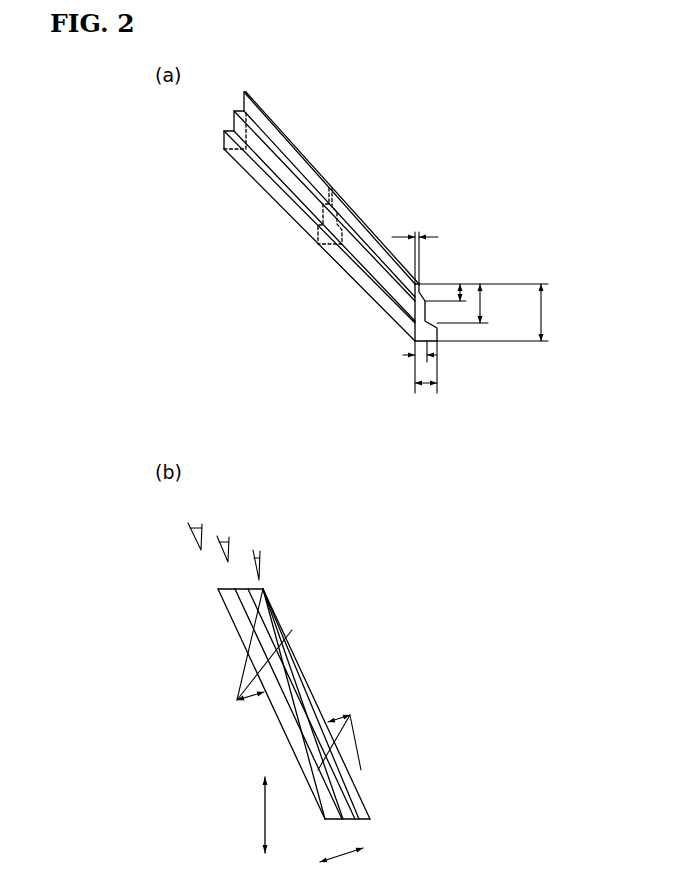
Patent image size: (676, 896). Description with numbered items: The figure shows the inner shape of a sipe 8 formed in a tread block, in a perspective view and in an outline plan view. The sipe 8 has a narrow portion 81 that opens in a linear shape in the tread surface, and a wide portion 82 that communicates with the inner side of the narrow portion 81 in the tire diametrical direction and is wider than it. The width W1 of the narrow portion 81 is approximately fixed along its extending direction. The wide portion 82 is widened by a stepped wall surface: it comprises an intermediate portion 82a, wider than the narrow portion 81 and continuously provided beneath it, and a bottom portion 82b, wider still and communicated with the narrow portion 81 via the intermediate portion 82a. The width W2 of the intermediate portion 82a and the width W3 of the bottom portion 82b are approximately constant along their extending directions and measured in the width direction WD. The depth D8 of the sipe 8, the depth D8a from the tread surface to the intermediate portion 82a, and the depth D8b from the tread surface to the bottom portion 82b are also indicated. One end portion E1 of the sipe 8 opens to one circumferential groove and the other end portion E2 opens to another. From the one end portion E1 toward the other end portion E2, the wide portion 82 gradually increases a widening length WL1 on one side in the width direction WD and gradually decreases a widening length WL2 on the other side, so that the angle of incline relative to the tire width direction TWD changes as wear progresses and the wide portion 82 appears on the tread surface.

The sipe 8 is at (317, 466).
The narrow portion 81 is at (367, 240).
The wide portion 82 is at (323, 465).
The intermediate portion 82a is at (361, 262).
The bottom portion 82b is at (371, 291).
The one end portion E1 is at (401, 342).
The other end portion E2 is at (218, 168).
The width of the narrow portion W1 is at (415, 246).
The width of the intermediate portion W2 is at (415, 363).
The width of the bottom portion W3 is at (429, 379).
The depth of the sipe D8 is at (505, 312).
The depth from the tread surface to the intermediate portion D8a is at (459, 283).
The depth from the tread surface to the bottom portion D8b is at (480, 303).
The widening length on one side WL1 is at (260, 657).
The widening length on the other side WL2 is at (342, 730).
The tire width direction TWD is at (238, 815).
The width direction WD is at (344, 866).